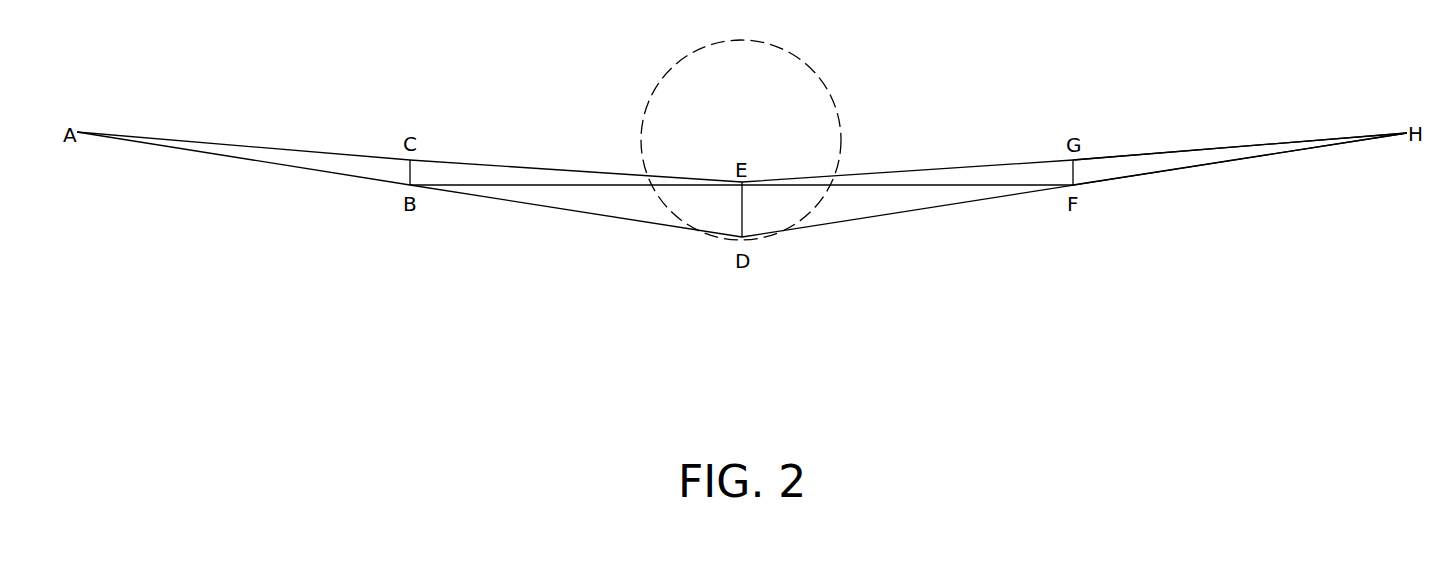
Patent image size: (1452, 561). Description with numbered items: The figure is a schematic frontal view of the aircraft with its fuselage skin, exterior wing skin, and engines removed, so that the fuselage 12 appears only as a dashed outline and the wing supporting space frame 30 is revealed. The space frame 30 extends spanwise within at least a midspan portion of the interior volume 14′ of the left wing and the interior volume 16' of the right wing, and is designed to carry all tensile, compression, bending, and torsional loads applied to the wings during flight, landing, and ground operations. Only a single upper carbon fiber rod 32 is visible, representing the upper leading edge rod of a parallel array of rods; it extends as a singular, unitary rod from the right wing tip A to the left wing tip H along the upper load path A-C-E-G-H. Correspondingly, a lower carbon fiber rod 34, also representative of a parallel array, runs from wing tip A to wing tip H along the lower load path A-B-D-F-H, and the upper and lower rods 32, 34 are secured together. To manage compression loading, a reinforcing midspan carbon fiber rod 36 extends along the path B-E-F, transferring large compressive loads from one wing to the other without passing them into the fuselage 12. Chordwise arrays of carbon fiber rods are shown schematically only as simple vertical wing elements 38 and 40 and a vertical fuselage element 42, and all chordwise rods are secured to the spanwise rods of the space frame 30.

The fuselage 12 is at (825, 83).
The interior volume of the left wing 14′ is at (1237, 120).
The interior volume of the right wing 16' is at (243, 124).
The space frame 30 is at (545, 124).
The upper carbon fiber rod 32 is at (1132, 153).
The lower carbon fiber rod 34 is at (892, 215).
The reinforcing midspan carbon fiber rod 36 is at (952, 185).
The vertical wing element 38 is at (408, 175).
The vertical wing element 40 is at (1075, 173).
The vertical fuselage element 42 is at (744, 212).